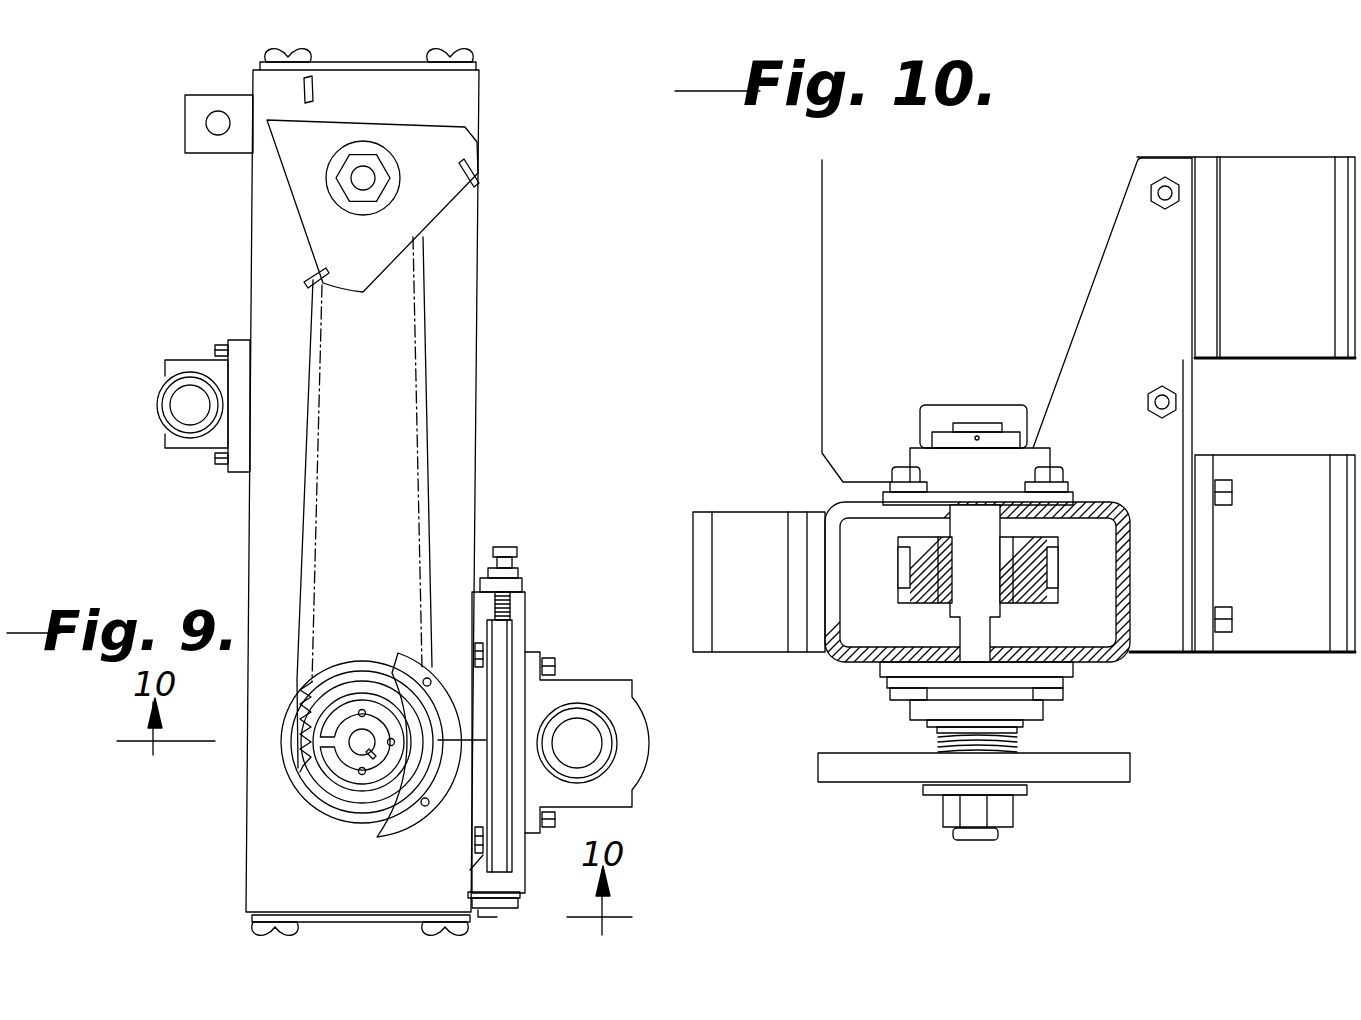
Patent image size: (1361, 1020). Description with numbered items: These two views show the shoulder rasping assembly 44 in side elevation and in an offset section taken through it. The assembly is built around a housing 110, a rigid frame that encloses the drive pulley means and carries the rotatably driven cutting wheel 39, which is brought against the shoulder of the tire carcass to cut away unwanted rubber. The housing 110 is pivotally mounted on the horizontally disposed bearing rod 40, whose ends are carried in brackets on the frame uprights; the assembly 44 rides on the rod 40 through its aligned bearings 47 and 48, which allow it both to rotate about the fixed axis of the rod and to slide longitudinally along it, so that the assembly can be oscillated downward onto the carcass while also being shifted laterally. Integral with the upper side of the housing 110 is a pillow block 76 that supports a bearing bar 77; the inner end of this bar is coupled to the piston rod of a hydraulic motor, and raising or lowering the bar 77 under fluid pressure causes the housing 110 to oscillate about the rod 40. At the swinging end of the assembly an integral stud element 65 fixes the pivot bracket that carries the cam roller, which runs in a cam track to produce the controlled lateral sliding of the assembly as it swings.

In FIG. 9, the cutting wheel 39 is at (460, 147).
In FIG. 9, the bearing rod 40 is at (592, 742).
In FIG. 10, the shoulder rasping assembly 44 is at (1086, 284).
In FIG. 10, the bearing 47 is at (1342, 643).
In FIG. 9, the bearing 48 is at (610, 690).
In FIG. 10, the bearing 48 is at (1347, 356).
In FIG. 9, the stud element 65 is at (216, 77).
In FIG. 9, the pillow block 76 is at (173, 366).
In FIG. 10, the pillow block 76 is at (706, 520).
In FIG. 9, the bearing bar 77 is at (193, 410).
In FIG. 9, the housing 110 is at (457, 421).
In FIG. 10, the housing 110 is at (1113, 660).